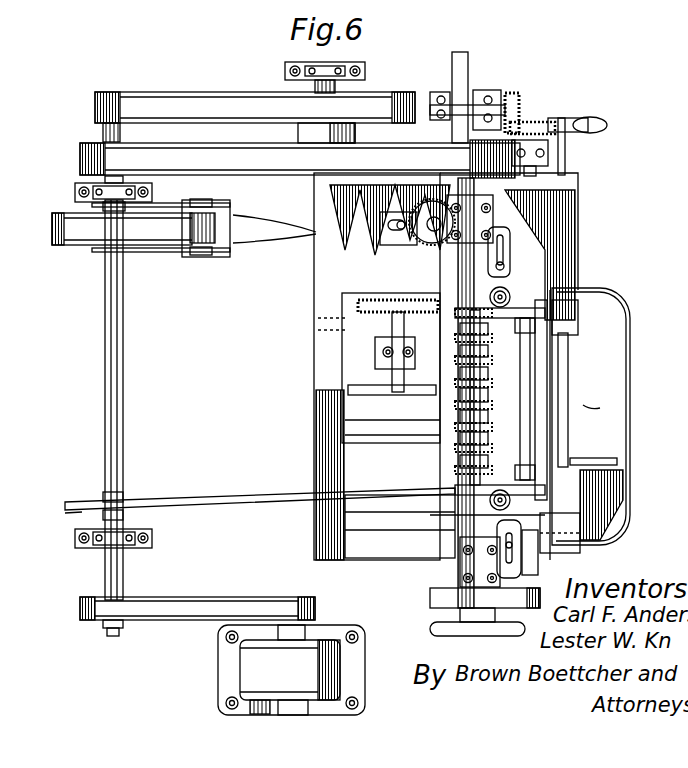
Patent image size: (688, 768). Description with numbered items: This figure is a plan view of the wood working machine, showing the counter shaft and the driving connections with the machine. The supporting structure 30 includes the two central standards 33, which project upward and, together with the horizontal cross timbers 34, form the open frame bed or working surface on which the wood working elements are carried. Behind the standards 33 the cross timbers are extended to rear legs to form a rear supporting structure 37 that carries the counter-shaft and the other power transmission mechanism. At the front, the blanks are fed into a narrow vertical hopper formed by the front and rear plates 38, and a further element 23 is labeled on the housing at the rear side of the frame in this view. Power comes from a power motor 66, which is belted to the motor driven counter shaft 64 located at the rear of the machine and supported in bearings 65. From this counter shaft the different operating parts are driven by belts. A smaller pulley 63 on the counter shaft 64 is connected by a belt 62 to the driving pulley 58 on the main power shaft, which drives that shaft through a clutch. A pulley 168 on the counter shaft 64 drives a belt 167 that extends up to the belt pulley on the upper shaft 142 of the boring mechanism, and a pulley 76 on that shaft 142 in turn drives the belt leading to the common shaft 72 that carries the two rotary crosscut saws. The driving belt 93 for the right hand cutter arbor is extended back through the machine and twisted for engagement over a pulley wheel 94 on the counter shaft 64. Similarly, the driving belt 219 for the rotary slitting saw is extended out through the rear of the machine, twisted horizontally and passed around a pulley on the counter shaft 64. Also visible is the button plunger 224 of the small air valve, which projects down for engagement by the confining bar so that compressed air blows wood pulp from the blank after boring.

The driving pulley 58 is at (255, 92).
The belt 62 is at (192, 100).
The smaller pulley 63 is at (528, 186).
The belt 167 is at (280, 170).
The pulley 168 is at (95, 142).
The supporting structure 30 is at (392, 558).
The horizontal cross timbers 34 is at (372, 558).
The central standards 33 is at (430, 265).
The upper shaft 142 is at (455, 505).
The common shaft 72 is at (530, 445).
The pulley 76 is at (480, 637).
The supporting structure 37 is at (578, 318).
The hopper plates 38 is at (568, 385).
The cover 23 is at (600, 408).
The bearings 65 is at (75, 192).
The counter shaft 64 is at (105, 346).
The button plunger 224 is at (64, 246).
The driving belt 219 is at (266, 240).
The driving belt 93 is at (245, 500).
The pulley wheel 94 is at (80, 502).
The power motor 66 is at (320, 668).